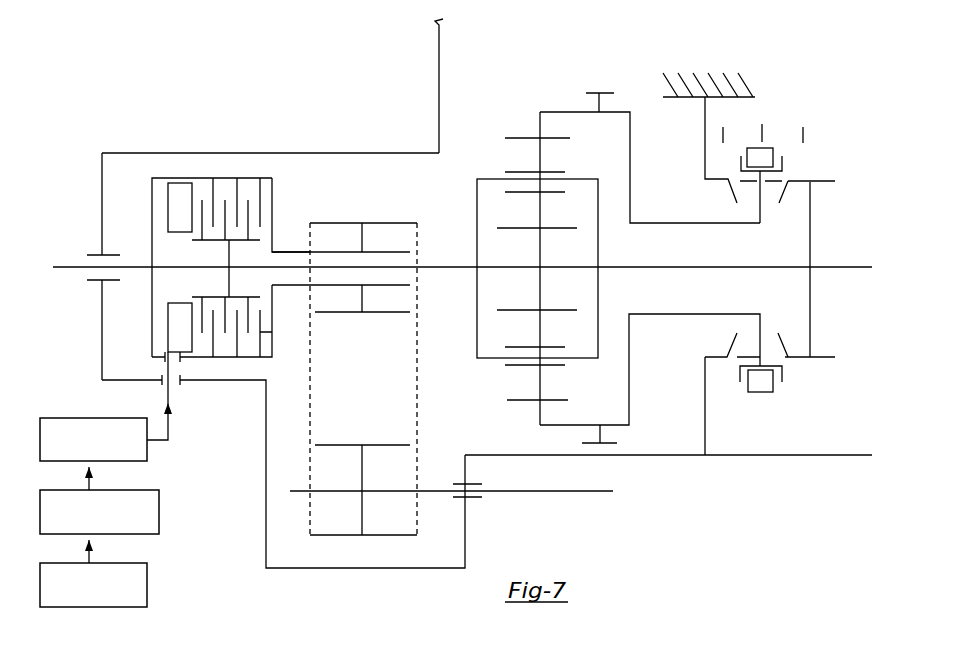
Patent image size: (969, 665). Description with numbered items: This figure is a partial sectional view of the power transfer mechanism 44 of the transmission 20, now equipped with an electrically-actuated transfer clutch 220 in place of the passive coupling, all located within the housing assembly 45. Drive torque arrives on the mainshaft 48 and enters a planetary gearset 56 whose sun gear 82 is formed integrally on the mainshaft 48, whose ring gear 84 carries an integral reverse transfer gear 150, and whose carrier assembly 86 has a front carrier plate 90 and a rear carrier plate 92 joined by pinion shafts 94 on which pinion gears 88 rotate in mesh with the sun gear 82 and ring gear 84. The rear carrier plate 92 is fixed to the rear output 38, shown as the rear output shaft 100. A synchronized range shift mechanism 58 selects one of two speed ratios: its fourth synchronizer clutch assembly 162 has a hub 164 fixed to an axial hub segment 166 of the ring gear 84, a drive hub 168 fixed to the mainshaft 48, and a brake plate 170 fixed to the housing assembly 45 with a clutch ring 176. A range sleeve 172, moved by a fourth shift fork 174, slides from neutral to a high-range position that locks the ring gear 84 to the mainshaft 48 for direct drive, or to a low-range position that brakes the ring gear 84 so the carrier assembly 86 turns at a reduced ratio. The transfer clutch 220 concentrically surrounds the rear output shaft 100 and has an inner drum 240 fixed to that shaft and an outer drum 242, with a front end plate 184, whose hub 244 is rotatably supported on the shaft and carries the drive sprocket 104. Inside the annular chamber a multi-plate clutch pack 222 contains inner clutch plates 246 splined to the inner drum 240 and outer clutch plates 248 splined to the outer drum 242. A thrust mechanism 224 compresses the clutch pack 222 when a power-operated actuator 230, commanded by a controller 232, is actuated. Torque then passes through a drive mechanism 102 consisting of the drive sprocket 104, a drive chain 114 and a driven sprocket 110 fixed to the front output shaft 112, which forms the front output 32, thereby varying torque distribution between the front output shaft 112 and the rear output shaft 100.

The transmission 20 is at (718, 507).
The front output 32 is at (585, 493).
The rear output 38 is at (58, 264).
The power transfer mechanism 44 is at (437, 203).
The housing assembly 45 is at (238, 152).
The mainshaft 48 is at (862, 270).
The planetary gearset 56 is at (500, 118).
The synchronized range shift mechanism 58 is at (805, 157).
The sun gear 82 is at (540, 248).
The ring gear 84 is at (542, 112).
The carrier assembly 86 is at (495, 360).
The pinion gears 88 is at (540, 157).
The front carrier plate 90 is at (598, 230).
The rear carrier plate 92 is at (477, 300).
The pinion shafts 94 is at (577, 178).
The rear output shaft 100 is at (68, 270).
The drive mechanism 102 is at (292, 395).
The drive sprocket 104 is at (372, 223).
The driven sprocket 110 is at (337, 535).
The front output shaft 112 is at (545, 490).
The drive chain 114 is at (312, 348).
The reverse transfer gear 150 is at (612, 92).
The fourth synchronizer clutch assembly 162 is at (793, 372).
The hub 164 is at (756, 225).
The axial hub segment 166 is at (664, 313).
The drive hub 168 is at (811, 244).
The brake plate 170 is at (705, 388).
The range sleeve 172 is at (747, 373).
The fourth shift fork 174 is at (763, 392).
The clutch ring 176 is at (705, 180).
The front end plate 184 is at (272, 195).
The electrically-actuated transfer clutch 220 is at (146, 176).
The multi-plate clutch pack 222 is at (233, 335).
The thrust mechanism 224 is at (177, 212).
The power-operated actuator 230 is at (87, 418).
The controller 232 is at (159, 520).
The inner drum 240 is at (228, 255).
The outer drum 242 is at (198, 176).
The hub 244 is at (292, 250).
The inner clutch plates 246 is at (248, 310).
The outer clutch plates 248 is at (272, 332).